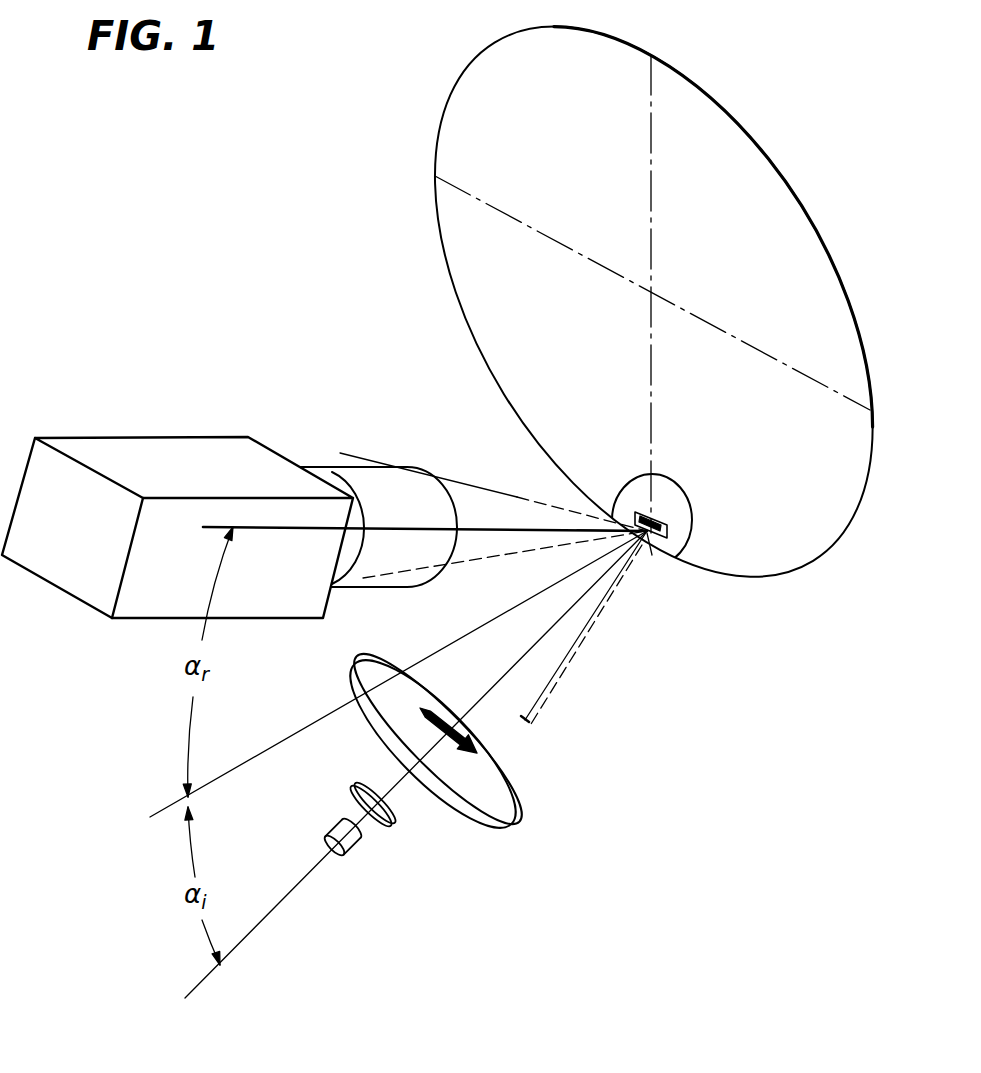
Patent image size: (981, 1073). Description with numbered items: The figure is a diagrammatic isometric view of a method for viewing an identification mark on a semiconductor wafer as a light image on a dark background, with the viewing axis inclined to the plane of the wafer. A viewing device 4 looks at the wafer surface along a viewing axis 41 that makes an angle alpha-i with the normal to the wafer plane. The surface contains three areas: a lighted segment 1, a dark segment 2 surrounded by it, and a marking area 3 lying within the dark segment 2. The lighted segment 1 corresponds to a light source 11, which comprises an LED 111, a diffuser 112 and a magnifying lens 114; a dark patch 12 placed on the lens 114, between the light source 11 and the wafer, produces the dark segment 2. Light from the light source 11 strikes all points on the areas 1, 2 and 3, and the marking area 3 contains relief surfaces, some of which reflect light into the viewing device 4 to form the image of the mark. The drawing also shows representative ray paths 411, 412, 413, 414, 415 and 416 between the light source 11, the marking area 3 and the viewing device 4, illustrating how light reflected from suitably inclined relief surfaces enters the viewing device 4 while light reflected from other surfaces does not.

The lighted segment 1 is at (670, 503).
The dark segment 2 is at (623, 477).
The marking area 3 is at (693, 527).
The viewing device 4 is at (133, 443).
The light source 11 is at (469, 780).
The dark patch 12 is at (528, 733).
The viewing axis 41 is at (550, 525).
The LED 111 is at (358, 852).
The diffuser 112 is at (397, 822).
The magnifying lens 114 is at (497, 805).
The light beam 411 is at (652, 555).
The reflected beam 412 is at (577, 529).
The incident beam 413 is at (617, 607).
The marginal beam 414 is at (487, 558).
The incident beam 415 is at (570, 643).
The marginal beam 416 is at (357, 455).